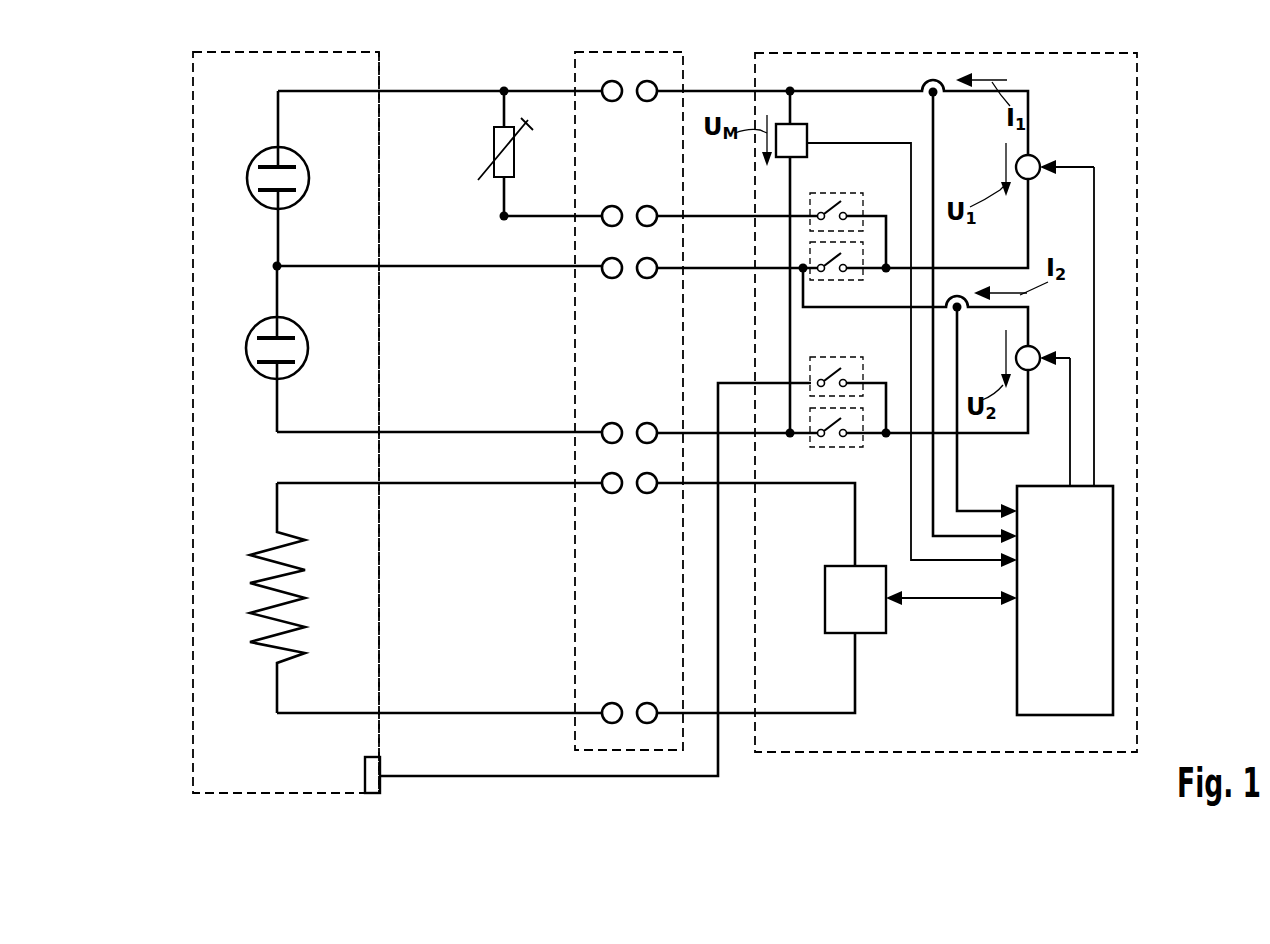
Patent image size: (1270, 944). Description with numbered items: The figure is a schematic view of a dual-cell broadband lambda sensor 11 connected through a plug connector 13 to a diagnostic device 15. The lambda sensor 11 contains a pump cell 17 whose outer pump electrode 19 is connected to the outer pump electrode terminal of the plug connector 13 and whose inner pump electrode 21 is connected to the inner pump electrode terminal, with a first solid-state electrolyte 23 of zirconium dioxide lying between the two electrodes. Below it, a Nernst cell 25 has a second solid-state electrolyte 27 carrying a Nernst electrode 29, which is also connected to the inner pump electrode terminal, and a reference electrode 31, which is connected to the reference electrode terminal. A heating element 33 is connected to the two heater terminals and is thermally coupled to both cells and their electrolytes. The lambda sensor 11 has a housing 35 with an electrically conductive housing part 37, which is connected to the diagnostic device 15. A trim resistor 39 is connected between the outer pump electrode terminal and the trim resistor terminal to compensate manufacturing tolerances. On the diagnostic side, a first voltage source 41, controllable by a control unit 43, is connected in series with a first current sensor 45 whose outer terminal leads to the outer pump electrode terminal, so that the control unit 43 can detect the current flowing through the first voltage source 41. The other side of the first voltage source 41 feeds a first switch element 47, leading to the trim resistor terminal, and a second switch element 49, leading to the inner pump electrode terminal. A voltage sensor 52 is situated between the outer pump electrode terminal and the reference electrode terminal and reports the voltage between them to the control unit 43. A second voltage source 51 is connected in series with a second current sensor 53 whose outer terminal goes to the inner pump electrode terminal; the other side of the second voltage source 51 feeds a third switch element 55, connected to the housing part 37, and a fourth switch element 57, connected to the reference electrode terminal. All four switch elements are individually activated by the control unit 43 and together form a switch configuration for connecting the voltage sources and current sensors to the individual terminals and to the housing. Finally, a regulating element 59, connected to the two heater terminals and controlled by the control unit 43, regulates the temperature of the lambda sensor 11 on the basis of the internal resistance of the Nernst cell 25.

The dual-cell broadband lambda sensor 11 is at (172, 50).
The plug connector 13 is at (575, 58).
The diagnostic device 15 is at (1139, 468).
The pump cell 17 is at (280, 179).
The outer pump electrode 19 is at (263, 165).
The inner pump electrode 21 is at (264, 193).
The first solid-state electrolyte 23 is at (292, 180).
The Nernst cell 25 is at (279, 353).
The second solid-state electrolyte 27 is at (292, 352).
The Nernst electrode 29 is at (290, 338).
The reference electrode 31 is at (266, 376).
The heating element 33 is at (252, 585).
The housing 35 is at (385, 70).
The electrically conductive housing part 37 is at (383, 777).
The trim resistor 39 is at (492, 142).
The first voltage source 41 is at (1040, 157).
The control unit 43 is at (1017, 648).
The first current sensor 45 is at (940, 98).
The first switch element 47 is at (840, 193).
The second switch element 49 is at (855, 282).
The second voltage source 51 is at (1038, 348).
The voltage sensor 52 is at (810, 132).
The second current sensor 53 is at (962, 314).
The third switch element 55 is at (832, 357).
The fourth switch element 57 is at (855, 448).
The regulating element 59 is at (870, 634).